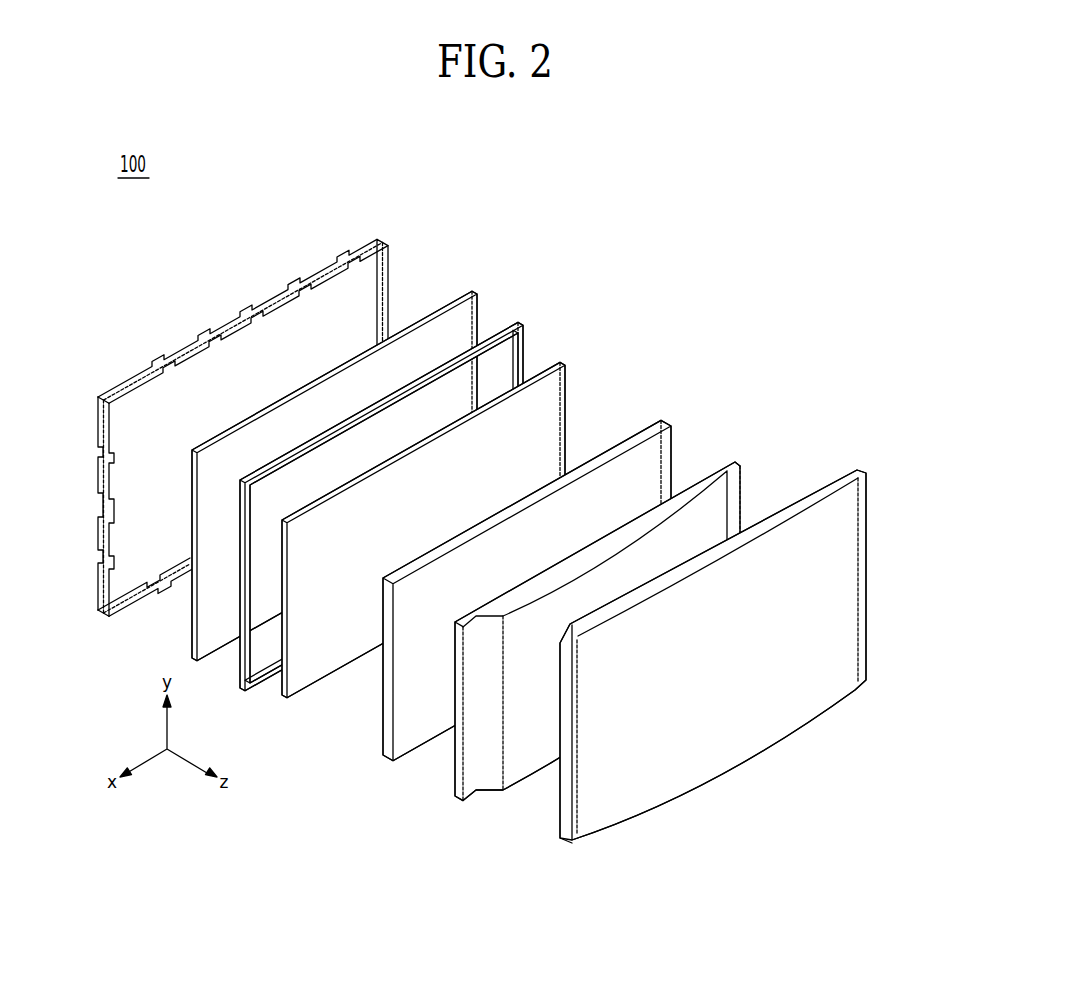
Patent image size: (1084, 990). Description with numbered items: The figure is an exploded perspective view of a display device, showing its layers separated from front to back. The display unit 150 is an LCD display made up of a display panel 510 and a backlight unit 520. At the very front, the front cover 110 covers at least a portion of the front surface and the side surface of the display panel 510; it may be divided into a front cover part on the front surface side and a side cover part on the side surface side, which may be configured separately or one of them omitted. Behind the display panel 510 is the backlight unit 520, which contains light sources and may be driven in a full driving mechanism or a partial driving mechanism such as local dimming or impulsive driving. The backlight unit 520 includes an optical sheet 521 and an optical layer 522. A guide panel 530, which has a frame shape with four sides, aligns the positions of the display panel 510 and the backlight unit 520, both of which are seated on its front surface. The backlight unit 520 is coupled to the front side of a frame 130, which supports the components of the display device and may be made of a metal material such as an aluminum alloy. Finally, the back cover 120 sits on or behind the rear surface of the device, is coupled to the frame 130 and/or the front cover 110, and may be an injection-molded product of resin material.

The front cover 110 is at (382, 240).
The display unit 150 is at (456, 480).
The display panel 510 is at (475, 294).
The guide panel 530 is at (524, 326).
The backlight unit 520 is at (501, 525).
The optical sheet 521 is at (566, 365).
The optical layer 522 is at (548, 562).
The frame 130 is at (740, 465).
The back cover 120 is at (858, 471).